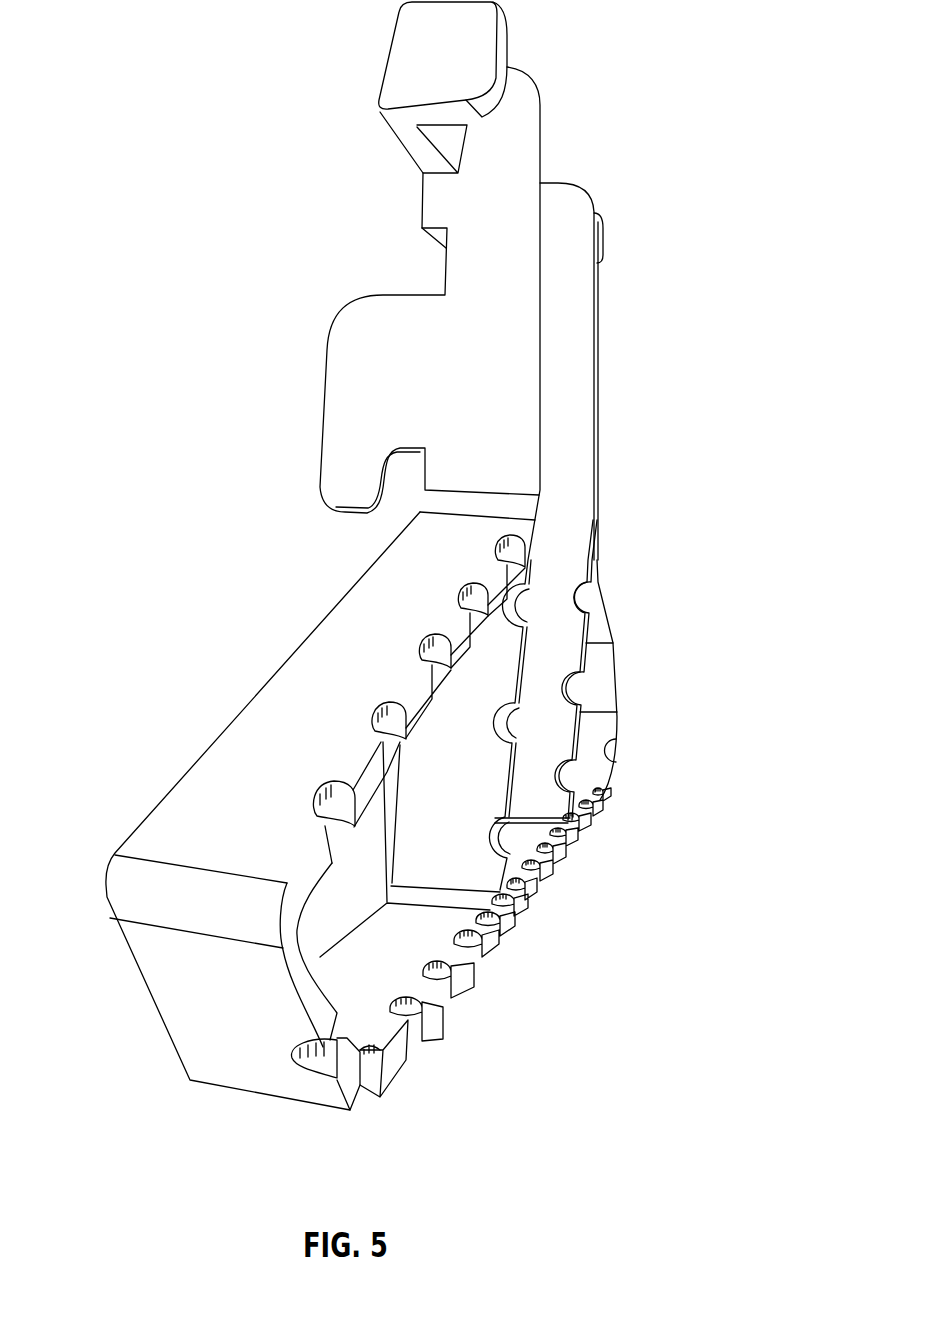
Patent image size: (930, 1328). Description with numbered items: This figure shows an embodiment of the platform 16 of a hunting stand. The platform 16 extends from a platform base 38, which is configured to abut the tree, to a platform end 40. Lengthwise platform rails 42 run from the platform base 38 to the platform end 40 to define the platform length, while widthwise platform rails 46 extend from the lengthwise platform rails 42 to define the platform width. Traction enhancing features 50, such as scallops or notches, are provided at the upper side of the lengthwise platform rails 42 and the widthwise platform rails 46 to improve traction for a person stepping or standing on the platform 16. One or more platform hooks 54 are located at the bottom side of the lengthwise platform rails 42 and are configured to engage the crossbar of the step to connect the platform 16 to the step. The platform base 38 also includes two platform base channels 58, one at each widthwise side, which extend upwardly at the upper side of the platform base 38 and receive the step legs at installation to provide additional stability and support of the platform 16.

The platform 16 is at (146, 35).
The platform base 38 is at (525, 100).
The platform end 40 is at (397, 1063).
The lengthwise platform rails 42 is at (590, 317).
The widthwise platform rails 46 is at (253, 730).
The traction enhancing features 50 is at (495, 927).
The platform hooks 54 is at (340, 490).
The platform base channels 58 is at (395, 117).